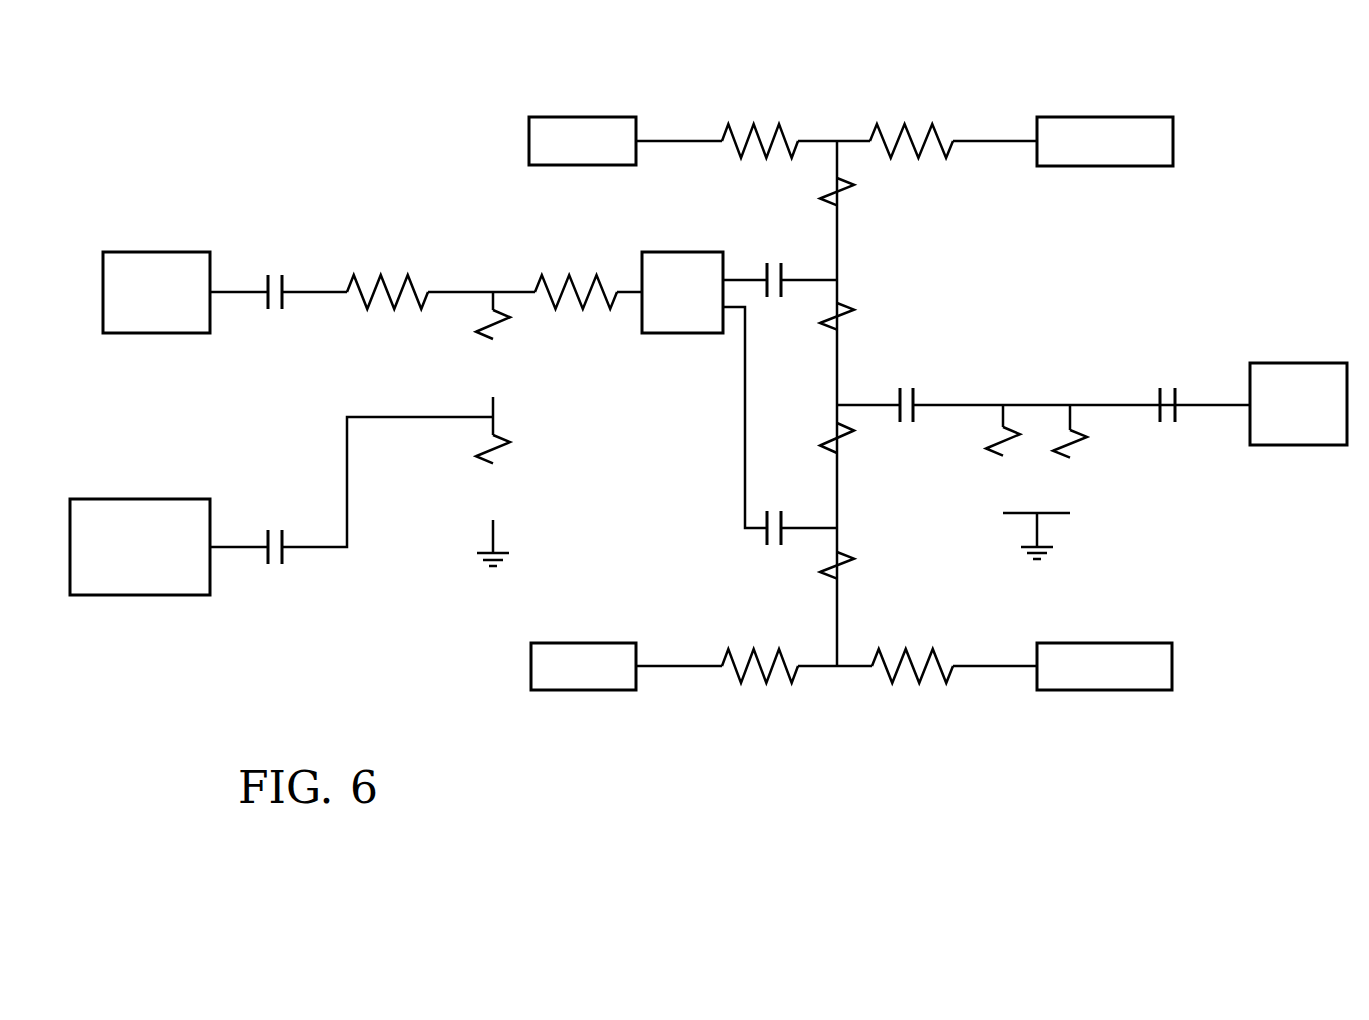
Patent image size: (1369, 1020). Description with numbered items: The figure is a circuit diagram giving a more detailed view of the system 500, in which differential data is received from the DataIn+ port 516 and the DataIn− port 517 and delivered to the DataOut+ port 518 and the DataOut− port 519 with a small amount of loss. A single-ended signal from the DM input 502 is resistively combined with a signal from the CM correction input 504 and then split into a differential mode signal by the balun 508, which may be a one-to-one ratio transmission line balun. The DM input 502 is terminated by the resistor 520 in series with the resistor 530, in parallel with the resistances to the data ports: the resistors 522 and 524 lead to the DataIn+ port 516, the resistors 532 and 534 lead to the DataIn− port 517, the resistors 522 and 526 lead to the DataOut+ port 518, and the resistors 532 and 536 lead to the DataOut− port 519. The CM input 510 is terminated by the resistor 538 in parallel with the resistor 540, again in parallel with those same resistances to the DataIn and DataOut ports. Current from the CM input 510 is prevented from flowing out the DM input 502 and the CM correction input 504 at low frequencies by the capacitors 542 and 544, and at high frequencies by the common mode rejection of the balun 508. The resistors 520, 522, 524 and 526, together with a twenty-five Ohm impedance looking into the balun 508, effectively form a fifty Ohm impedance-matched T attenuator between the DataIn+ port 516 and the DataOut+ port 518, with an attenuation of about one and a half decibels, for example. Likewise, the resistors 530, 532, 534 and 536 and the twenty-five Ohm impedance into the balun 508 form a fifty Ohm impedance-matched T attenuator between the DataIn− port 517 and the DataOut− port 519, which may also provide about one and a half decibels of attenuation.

The system 500 is at (194, 136).
The differential mode (DM) input 502 is at (158, 252).
The common mode (CM) correction input 504 is at (142, 499).
The balun 508 is at (684, 252).
The CM input 510 is at (1301, 363).
The DataIn+ port 516 is at (584, 117).
The DataIn− port 517 is at (584, 643).
The DataOut+ port 518 is at (1105, 118).
The DataOut− port 519 is at (1105, 643).
The resistor 520 is at (852, 322).
The resistor 522 is at (852, 197).
The resistor 524 is at (769, 125).
The resistor 526 is at (906, 125).
The resistor 530 is at (852, 447).
The resistor 532 is at (852, 597).
The resistor 534 is at (757, 684).
The resistor 536 is at (920, 684).
The resistor 538 is at (989, 491).
The resistor 540 is at (1085, 452).
The capacitor 542 is at (775, 262).
The capacitor 544 is at (776, 511).